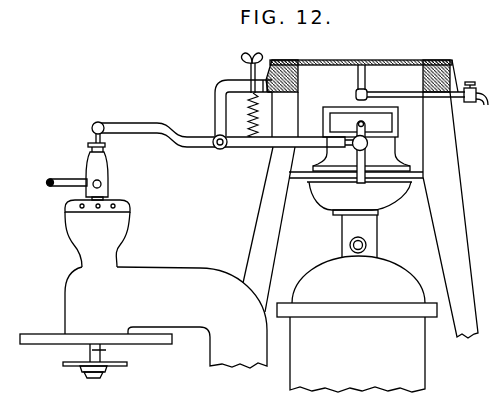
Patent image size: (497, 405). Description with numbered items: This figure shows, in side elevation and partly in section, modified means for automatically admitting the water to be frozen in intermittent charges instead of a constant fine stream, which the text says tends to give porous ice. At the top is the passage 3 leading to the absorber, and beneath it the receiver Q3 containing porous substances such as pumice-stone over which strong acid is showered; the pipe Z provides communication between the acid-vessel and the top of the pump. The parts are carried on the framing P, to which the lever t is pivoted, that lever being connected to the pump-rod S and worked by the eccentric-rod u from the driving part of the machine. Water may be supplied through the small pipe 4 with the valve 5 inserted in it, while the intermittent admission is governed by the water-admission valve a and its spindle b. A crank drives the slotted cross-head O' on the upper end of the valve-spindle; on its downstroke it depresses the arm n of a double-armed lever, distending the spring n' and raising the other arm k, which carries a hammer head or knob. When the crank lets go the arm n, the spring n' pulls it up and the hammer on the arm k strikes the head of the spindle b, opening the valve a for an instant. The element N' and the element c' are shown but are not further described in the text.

The supply pipe with faucet N' is at (422, 85).
The spring n' is at (257, 98).
The arm of double-armed lever n is at (285, 115).
The hammer arm k is at (222, 140).
The slotted cross-head O' is at (362, 161).
The pump-rod S is at (356, 157).
The pipe Z is at (366, 245).
The receiver Q3 is at (357, 324).
The framing P is at (360, 215).
The valve spindle b is at (105, 248).
The handle c' is at (63, 192).
The lever t is at (127, 201).
The eccentric-rod u is at (97, 239).
The passage 3 is at (166, 317).
The valve 5 is at (126, 366).
The small pipe 4 is at (105, 371).
The water-admission valve a is at (93, 383).